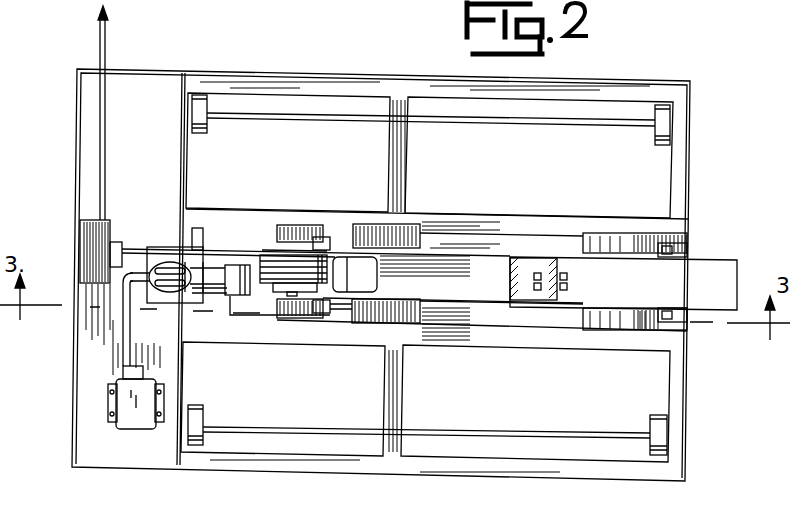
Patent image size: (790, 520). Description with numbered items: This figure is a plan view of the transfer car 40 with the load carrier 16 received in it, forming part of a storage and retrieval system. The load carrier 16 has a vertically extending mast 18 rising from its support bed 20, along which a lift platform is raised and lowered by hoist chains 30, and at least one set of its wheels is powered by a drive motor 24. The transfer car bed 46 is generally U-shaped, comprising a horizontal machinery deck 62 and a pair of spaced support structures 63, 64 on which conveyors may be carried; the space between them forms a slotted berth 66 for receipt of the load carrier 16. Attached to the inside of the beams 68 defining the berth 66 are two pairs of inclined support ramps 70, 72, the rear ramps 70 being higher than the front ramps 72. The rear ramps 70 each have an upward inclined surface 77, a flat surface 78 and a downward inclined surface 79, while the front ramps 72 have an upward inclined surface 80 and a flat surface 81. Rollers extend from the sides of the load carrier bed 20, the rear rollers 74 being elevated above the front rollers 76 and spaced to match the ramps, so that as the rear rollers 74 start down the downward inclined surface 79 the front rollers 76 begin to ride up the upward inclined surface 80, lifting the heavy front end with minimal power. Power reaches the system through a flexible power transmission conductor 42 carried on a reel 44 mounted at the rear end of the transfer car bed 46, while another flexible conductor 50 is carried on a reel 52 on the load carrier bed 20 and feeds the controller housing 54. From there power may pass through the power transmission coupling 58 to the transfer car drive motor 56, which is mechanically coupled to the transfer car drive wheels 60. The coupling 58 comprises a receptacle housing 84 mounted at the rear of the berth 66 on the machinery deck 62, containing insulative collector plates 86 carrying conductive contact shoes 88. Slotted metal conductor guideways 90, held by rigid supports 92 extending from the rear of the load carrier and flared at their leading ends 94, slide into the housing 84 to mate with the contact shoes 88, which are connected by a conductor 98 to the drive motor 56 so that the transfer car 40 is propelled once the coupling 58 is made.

The load carrier 16 is at (494, 238).
The mast 18 is at (497, 292).
The support bed 20 is at (712, 300).
The drive motor 24 is at (360, 320).
The hoist chains 30 is at (538, 292).
The transfer car 40 is at (328, 70).
The flexible power transmission conductor 42 is at (106, 144).
The reel 44 is at (112, 222).
The transfer car bed 46 is at (140, 340).
The flexible power transmission conductor 50 is at (205, 228).
The reel 52 is at (283, 253).
The controller housing 54 is at (447, 240).
The transfer car drive motor 56 is at (108, 403).
The power transmission coupling 58 is at (244, 333).
The transfer car drive wheels 60 is at (208, 127).
The horizontal machinery deck 62 is at (98, 332).
The support structure 63 is at (416, 82).
The support structure 64 is at (443, 469).
The slotted berth 66 is at (365, 218).
The beams 68 is at (463, 248).
The rear support ramps 70 is at (378, 318).
The front support ramps 72 is at (605, 238).
The rear rollers 74 is at (318, 236).
The front rollers 76 is at (690, 248).
The upward inclined surface 77 is at (408, 324).
The flat surface 78 is at (337, 321).
The downward inclined surface 79 is at (293, 318).
The upward inclined surface 80 is at (643, 332).
The flat surface 81 is at (626, 238).
The receptacle housing 84 is at (156, 250).
The insulative collector plates 86 is at (183, 298).
The conductive contact shoes 88 is at (215, 298).
The slotted metal conductor guideways 90 is at (212, 264).
The rigid supports 92 is at (260, 254).
The flared leading end 94 is at (192, 262).
The conductor 98 is at (118, 350).